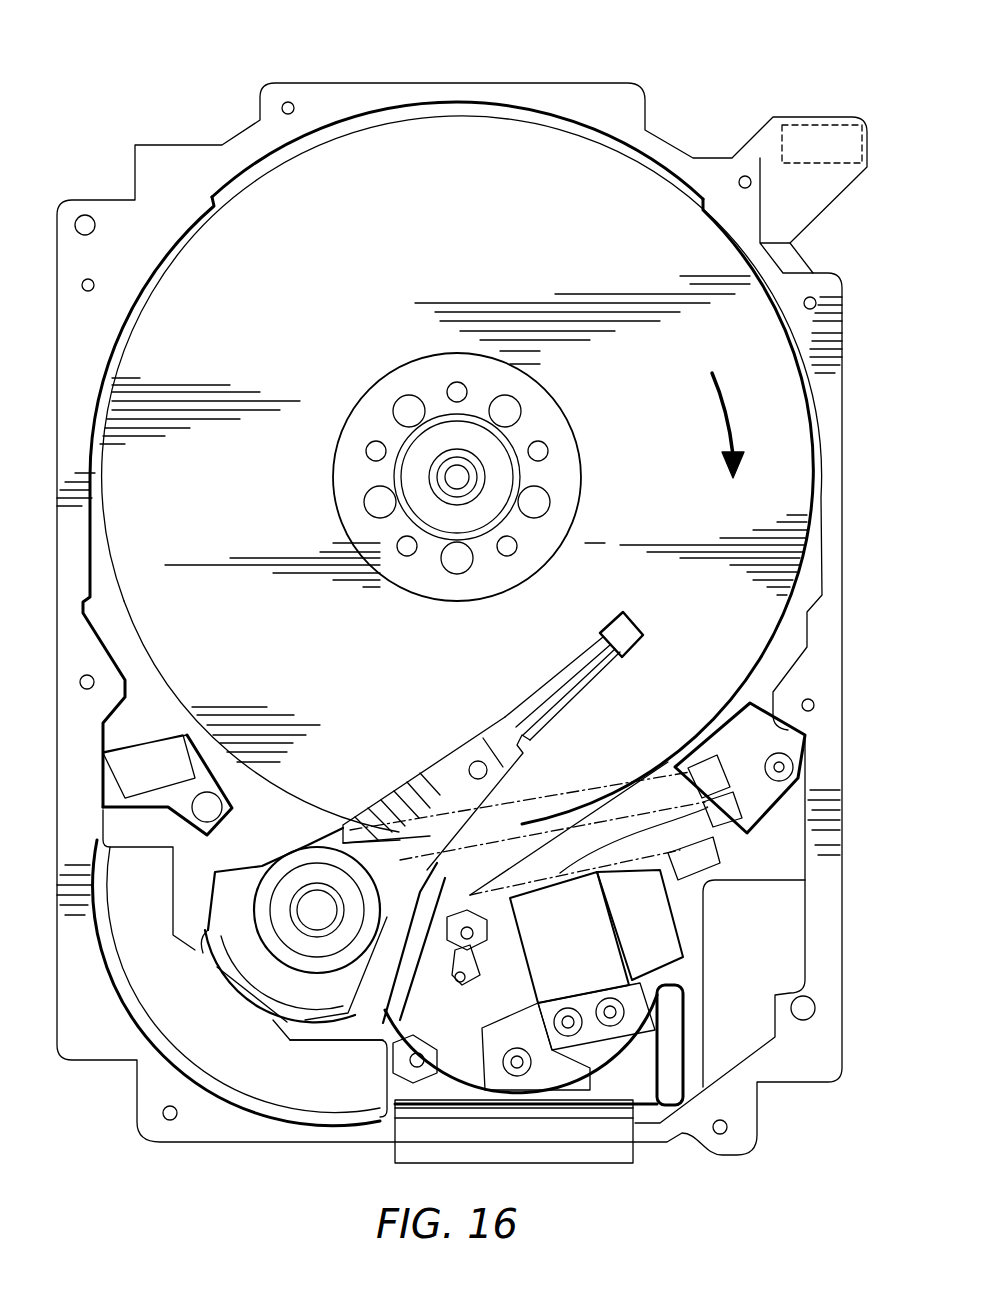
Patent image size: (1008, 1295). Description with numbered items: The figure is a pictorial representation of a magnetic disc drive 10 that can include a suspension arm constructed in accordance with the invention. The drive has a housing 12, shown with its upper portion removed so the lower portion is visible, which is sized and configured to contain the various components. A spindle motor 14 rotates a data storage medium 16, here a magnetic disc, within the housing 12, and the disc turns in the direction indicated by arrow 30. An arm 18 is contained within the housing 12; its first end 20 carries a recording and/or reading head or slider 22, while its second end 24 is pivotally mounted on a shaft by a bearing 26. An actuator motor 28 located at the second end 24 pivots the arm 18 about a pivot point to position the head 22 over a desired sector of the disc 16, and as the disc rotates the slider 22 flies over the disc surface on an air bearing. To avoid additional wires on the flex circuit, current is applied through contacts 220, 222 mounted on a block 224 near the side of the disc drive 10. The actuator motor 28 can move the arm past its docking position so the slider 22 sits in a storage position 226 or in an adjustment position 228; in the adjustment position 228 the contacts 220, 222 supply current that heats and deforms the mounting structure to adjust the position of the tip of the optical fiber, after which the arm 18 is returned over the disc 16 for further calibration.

The disc drive 10 is at (118, 127).
The housing 12 is at (597, 94).
The spindle motor 14 is at (448, 480).
The data storage medium 16 is at (337, 259).
The arm 18 is at (440, 785).
The first end 20 is at (565, 667).
The slider 22 is at (633, 626).
The second end 24 is at (343, 813).
The bearing 26 is at (306, 900).
The actuator motor 28 is at (181, 1036).
The arrow 30 is at (727, 420).
The contact 220 is at (712, 833).
The contact 222 is at (652, 848).
The block 224 is at (703, 865).
The storage position 226 is at (716, 768).
The adjustment position 228 is at (730, 805).